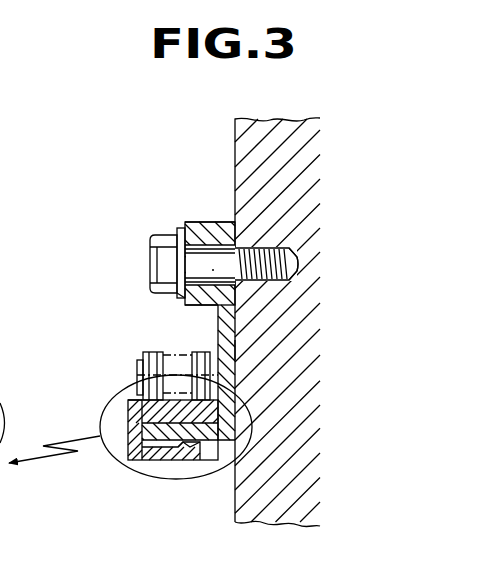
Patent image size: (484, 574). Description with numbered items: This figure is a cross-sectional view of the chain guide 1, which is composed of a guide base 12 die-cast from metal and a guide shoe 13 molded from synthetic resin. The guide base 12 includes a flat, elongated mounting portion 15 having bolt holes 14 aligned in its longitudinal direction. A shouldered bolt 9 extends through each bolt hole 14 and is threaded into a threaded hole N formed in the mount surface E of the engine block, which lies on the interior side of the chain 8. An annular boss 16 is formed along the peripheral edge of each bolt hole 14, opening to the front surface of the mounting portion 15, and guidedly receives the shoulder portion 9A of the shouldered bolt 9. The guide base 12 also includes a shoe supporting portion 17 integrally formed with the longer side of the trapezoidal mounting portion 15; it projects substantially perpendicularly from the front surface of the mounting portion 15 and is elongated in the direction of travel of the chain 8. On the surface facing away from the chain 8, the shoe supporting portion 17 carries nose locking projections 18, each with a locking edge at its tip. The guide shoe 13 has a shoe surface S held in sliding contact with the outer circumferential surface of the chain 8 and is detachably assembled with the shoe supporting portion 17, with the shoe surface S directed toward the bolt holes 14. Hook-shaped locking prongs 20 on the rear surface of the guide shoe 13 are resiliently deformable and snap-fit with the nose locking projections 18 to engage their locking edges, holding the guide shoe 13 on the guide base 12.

The mount surface E is at (234, 150).
The shoulder portion 9A is at (215, 226).
The bolt hole 14 is at (197, 224).
The bolt 9 is at (150, 240).
The threaded hole N is at (299, 263).
The annular boss 16 is at (187, 306).
The chain guide 1 is at (131, 272).
The guide base 12 is at (216, 323).
The mounting portion 15 is at (250, 352).
The chain 8 is at (141, 353).
The shoe surface S is at (136, 401).
The guide shoe 13 is at (104, 445).
The shoe supporting portion 17 is at (208, 438).
The nose locking projection 18 is at (166, 459).
The locking prong 20 is at (185, 460).